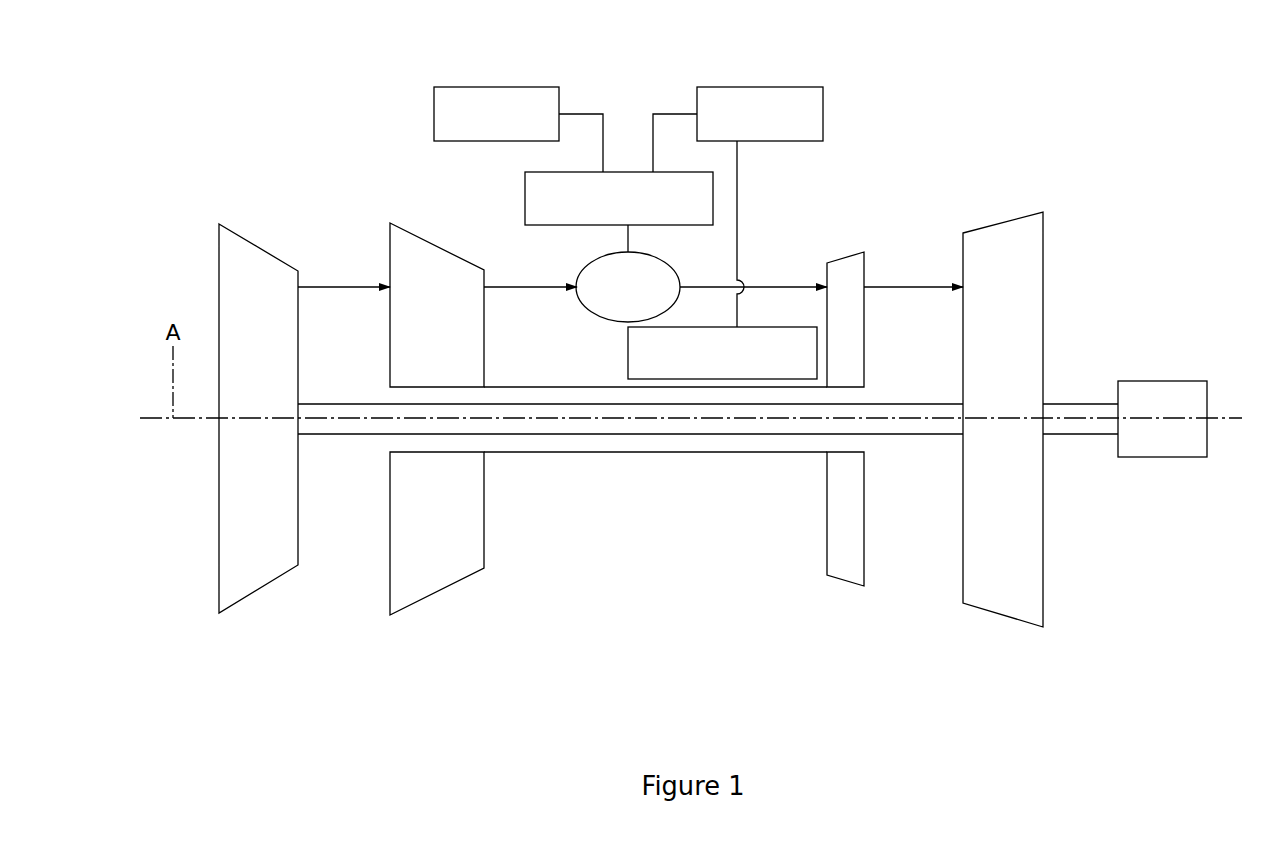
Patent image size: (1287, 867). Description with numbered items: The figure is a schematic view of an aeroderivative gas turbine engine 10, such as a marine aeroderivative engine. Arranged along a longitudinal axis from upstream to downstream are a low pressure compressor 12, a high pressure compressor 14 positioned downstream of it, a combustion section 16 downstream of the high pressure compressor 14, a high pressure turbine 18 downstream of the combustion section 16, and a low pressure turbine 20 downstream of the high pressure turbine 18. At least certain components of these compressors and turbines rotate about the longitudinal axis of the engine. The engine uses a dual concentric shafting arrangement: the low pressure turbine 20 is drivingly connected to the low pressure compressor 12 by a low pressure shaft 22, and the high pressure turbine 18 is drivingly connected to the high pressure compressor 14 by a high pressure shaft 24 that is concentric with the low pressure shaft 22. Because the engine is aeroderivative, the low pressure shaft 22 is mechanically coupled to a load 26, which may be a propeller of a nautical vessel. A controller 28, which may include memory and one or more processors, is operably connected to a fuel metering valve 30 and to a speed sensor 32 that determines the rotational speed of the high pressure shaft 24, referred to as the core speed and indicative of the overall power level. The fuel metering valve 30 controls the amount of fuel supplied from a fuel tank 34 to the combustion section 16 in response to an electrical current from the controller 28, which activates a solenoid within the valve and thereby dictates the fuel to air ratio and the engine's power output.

The aeroderivative gas turbine engine 10 is at (337, 242).
The low pressure compressor 12 is at (218, 570).
The high pressure compressor 14 is at (462, 580).
The combustion section 16 is at (582, 262).
The high pressure turbine 18 is at (826, 513).
The low pressure turbine 20 is at (1020, 217).
The low pressure shaft 22 is at (877, 435).
The high pressure shaft 24 is at (605, 452).
The load 26 is at (1165, 381).
The controller 28 is at (753, 87).
The fuel metering valve 30 is at (525, 197).
The speed sensor 32 is at (628, 347).
The fuel tank 34 is at (497, 87).